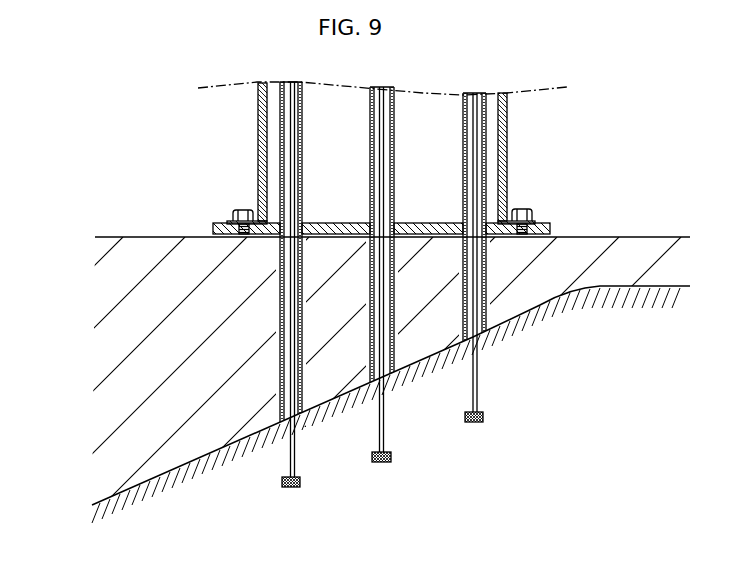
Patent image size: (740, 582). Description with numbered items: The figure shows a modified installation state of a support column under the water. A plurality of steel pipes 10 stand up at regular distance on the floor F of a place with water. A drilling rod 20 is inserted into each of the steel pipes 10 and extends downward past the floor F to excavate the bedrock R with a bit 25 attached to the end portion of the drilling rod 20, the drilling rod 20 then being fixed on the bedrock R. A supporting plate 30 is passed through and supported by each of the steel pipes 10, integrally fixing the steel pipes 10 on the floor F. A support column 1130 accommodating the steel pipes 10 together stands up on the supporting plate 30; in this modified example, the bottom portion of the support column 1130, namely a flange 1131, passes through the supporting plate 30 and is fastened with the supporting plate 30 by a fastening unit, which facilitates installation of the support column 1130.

The steel pipe 10 is at (486, 132).
The drilling rod 20 is at (478, 116).
The bit 25 is at (484, 418).
The supporting plate 30 is at (549, 224).
The support column 1130 is at (258, 127).
The flange 1131 is at (528, 210).
The floor F is at (118, 237).
The bedrock R is at (172, 469).